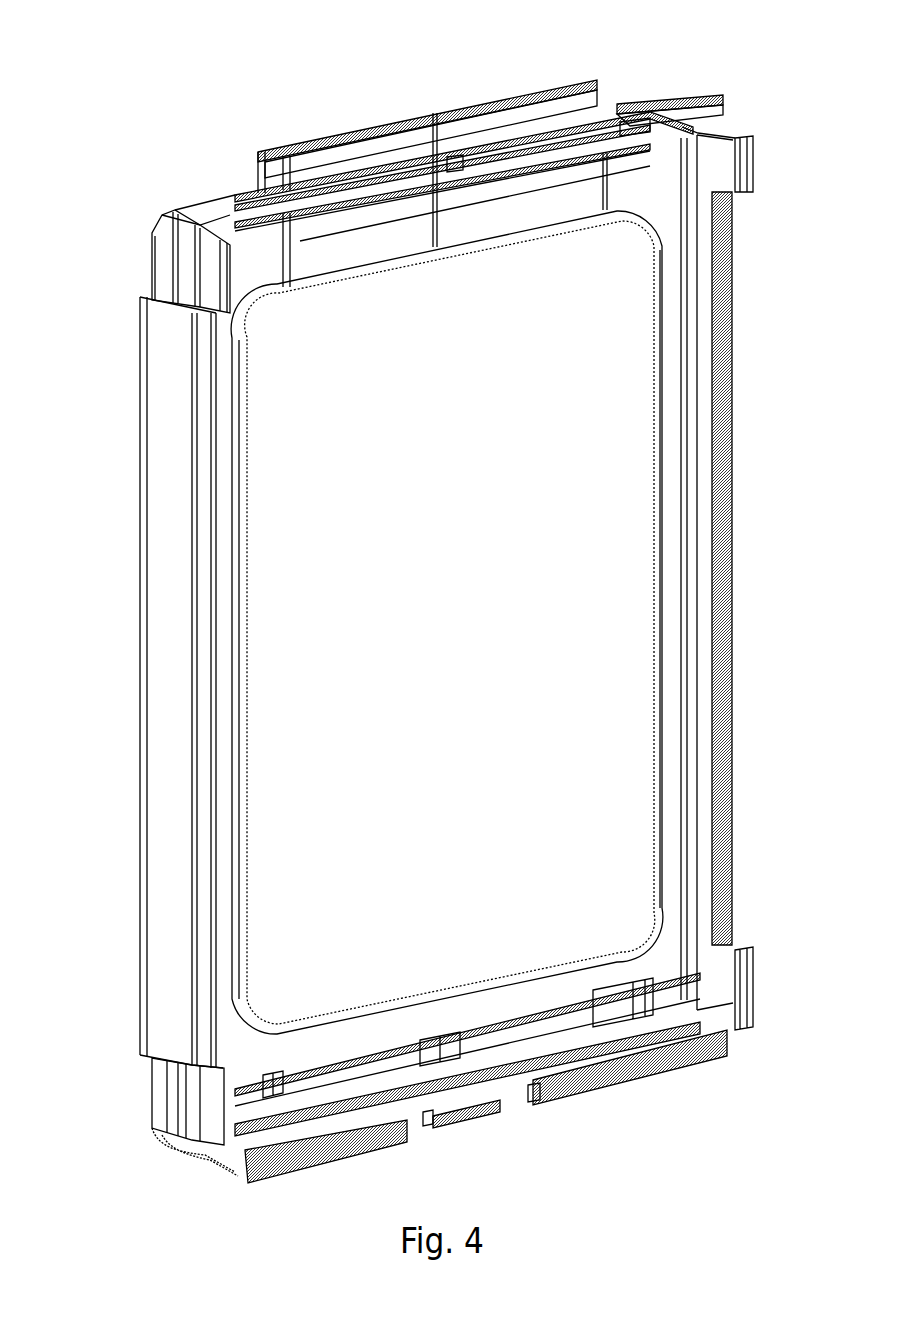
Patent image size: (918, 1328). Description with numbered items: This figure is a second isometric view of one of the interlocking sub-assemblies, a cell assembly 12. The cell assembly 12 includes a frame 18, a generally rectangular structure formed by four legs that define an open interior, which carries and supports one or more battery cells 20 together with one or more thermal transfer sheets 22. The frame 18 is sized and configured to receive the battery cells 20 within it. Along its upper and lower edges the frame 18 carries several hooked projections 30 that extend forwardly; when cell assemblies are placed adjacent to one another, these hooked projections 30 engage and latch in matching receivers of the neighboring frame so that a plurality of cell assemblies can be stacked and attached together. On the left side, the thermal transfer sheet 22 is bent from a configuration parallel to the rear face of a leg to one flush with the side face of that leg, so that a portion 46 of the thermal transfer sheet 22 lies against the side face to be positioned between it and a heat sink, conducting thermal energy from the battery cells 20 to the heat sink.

The cell assembly 12 is at (240, 92).
The frame 18 is at (168, 228).
The battery cell 20 is at (457, 637).
The thermal transfer sheet 22 is at (166, 512).
The hooked projection 30 is at (215, 288).
The portion of thermal transfer sheet 46 is at (168, 688).